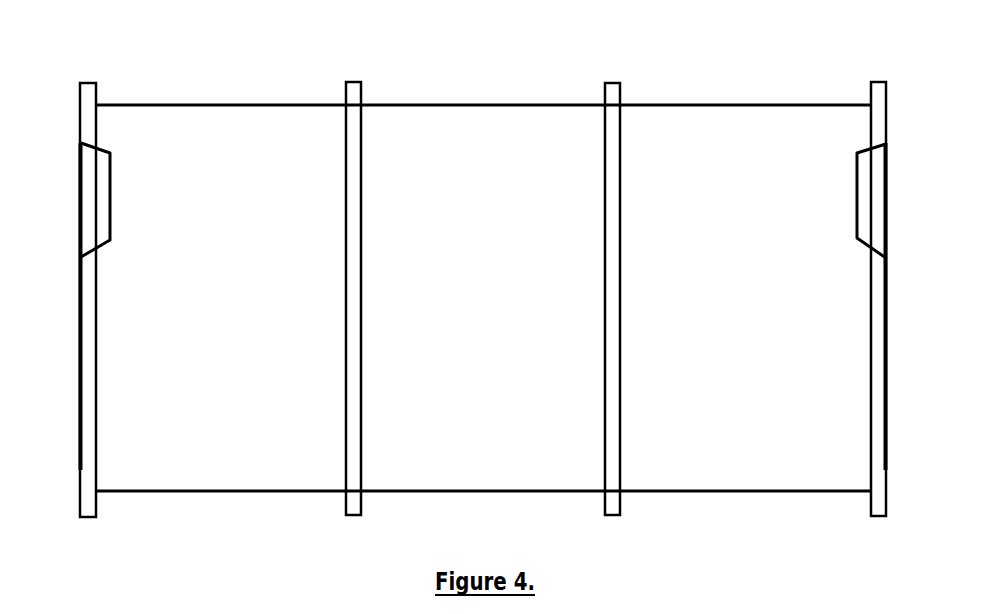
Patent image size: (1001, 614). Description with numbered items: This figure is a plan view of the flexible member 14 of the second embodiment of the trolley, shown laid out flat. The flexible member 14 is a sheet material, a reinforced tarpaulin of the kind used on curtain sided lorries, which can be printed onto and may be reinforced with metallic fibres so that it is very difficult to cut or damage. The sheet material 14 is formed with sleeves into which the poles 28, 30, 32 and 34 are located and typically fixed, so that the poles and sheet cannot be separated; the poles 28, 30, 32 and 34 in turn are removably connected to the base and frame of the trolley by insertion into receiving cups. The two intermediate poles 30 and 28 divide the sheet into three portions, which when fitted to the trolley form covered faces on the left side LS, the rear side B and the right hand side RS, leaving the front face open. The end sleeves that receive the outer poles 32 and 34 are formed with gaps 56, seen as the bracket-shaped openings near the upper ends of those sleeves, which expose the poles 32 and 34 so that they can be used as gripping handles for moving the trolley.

The flexible member 14 is at (687, 470).
The pole 28 is at (605, 83).
The pole 30 is at (345, 83).
The pole 32 is at (88, 80).
The pole 34 is at (871, 83).
The gap 56 is at (102, 220).
The left side LS is at (211, 133).
The rear side B is at (535, 120).
The right hand side RS is at (757, 138).